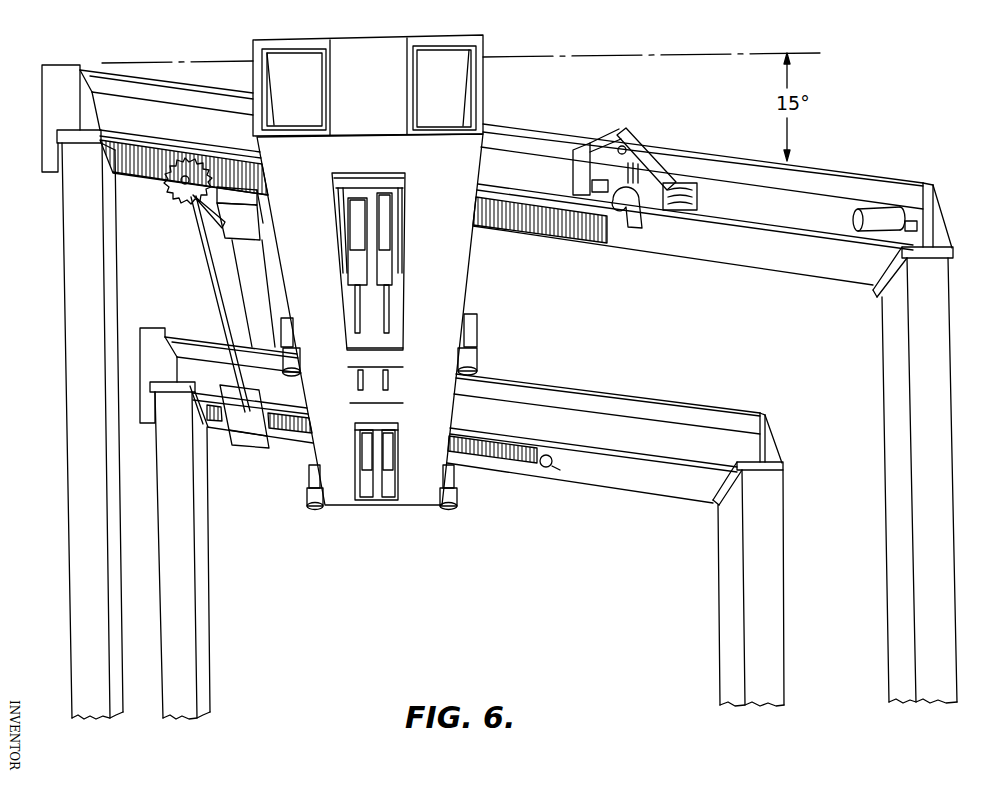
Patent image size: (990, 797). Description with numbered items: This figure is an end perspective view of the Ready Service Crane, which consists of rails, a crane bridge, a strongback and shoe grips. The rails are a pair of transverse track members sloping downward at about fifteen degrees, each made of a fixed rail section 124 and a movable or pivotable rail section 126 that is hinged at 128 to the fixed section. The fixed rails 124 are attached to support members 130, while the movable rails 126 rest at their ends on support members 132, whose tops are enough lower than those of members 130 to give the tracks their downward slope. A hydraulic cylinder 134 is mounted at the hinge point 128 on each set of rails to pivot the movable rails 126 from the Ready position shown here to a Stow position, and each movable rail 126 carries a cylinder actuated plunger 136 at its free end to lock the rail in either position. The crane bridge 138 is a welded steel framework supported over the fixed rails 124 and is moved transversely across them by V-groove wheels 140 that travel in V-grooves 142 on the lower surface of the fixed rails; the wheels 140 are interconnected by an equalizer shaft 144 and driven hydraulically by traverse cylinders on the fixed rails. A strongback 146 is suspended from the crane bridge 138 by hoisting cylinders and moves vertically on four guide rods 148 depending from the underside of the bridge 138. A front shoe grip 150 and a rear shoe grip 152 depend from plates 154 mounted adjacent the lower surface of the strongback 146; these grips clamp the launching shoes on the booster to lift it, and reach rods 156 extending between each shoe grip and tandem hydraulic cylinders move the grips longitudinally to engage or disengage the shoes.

The fixed rail section 124 is at (540, 132).
The movable rail section 126 is at (852, 183).
The hinge 128 is at (640, 217).
The support members 130 is at (67, 267).
The support members 132 is at (888, 550).
The hydraulic cylinder 134 is at (657, 172).
The cylinder actuated plunger 136 is at (913, 222).
The crane bridge 138 is at (243, 282).
The V-groove wheels 140 is at (176, 196).
The V-grooves 142 is at (556, 232).
The equalizer shaft 144 is at (206, 262).
The strongback 146 is at (318, 169).
The guide rods 148 is at (474, 352).
The front shoe grip 150 is at (390, 268).
The rear shoe grip 152 is at (393, 496).
The plates 154 is at (372, 200).
The reach rods 156 is at (355, 321).